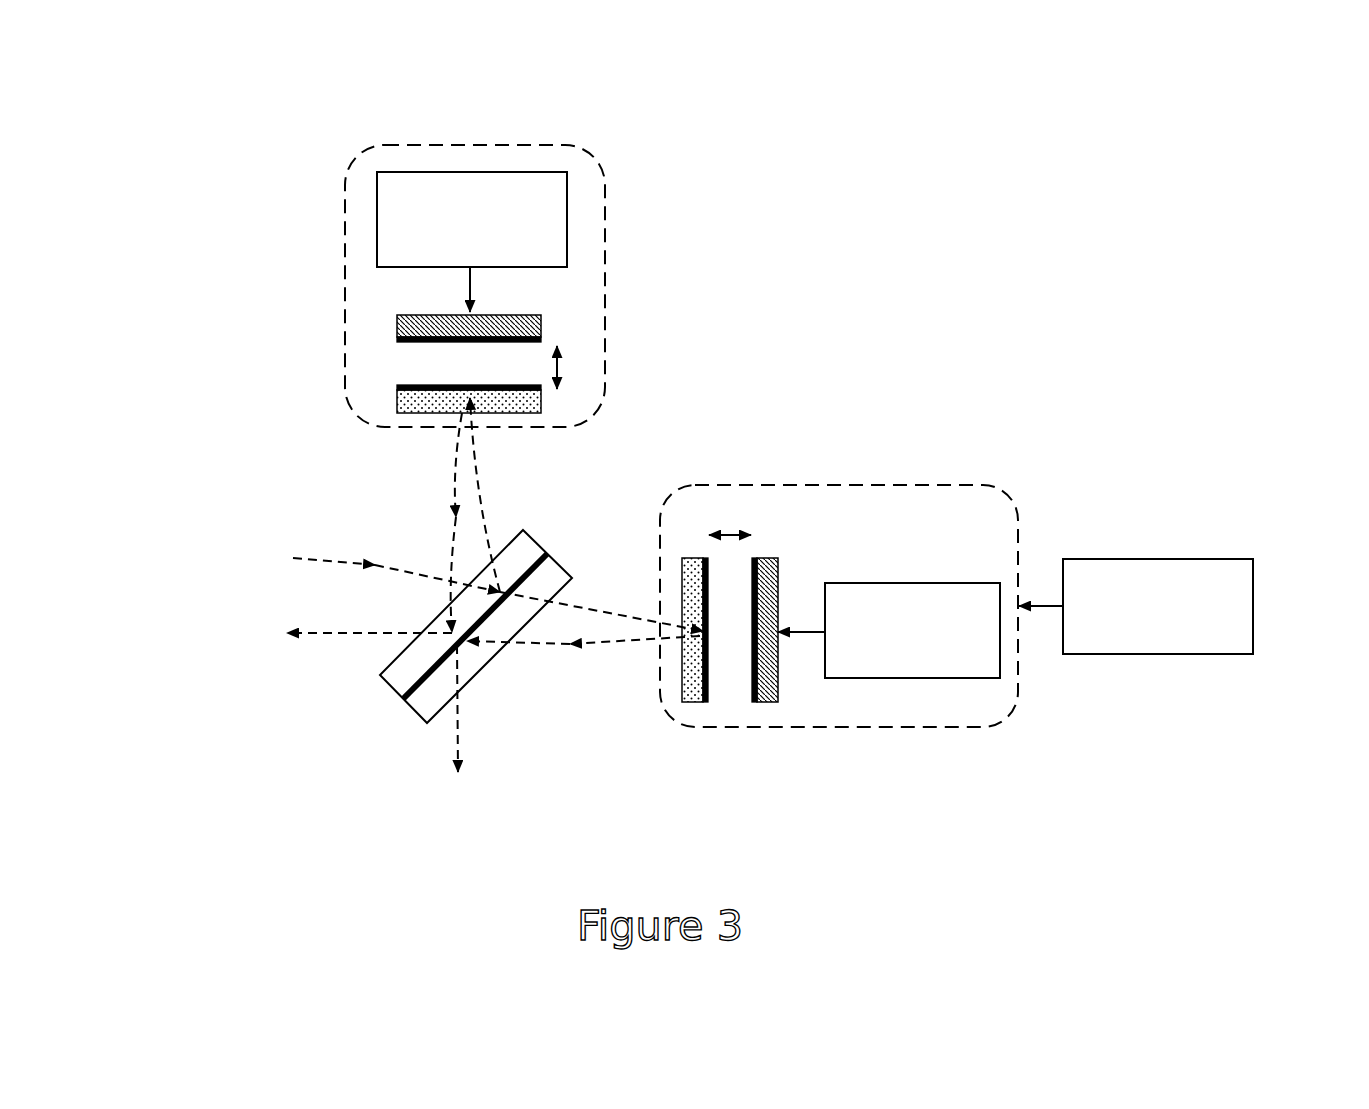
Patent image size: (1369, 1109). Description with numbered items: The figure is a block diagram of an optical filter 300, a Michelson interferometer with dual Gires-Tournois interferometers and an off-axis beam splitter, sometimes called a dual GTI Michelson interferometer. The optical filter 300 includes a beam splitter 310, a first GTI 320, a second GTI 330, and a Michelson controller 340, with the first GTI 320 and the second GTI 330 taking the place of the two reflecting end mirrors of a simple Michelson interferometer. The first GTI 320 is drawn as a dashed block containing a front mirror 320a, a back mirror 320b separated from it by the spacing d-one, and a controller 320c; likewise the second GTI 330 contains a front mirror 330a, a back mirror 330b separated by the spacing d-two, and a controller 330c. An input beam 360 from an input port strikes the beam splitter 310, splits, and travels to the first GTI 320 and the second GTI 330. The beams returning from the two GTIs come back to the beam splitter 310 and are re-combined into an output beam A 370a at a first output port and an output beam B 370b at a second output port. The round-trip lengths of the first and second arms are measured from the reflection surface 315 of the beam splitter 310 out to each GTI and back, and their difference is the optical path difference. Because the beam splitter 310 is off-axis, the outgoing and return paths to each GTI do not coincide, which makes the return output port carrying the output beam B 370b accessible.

The optical filter 300 is at (1209, 411).
The beam splitter 310 is at (397, 723).
The reflection surface 315 is at (405, 707).
The GTI 1 320 is at (615, 209).
The GTI 1 front mirror 320a is at (397, 388).
The GTI 1 back mirror 320b is at (397, 340).
The GTI 1 controller 320c is at (345, 215).
The GTI 2 330 is at (838, 483).
The GTI 2 front mirror 330a is at (690, 703).
The GTI 2 back mirror 330b is at (767, 703).
The GTI 2 controller 330c is at (883, 679).
The Michelson controller 340 is at (1121, 655).
The input beam 360 is at (426, 578).
The output beam A 370a is at (496, 759).
The output beam B 370b is at (263, 640).